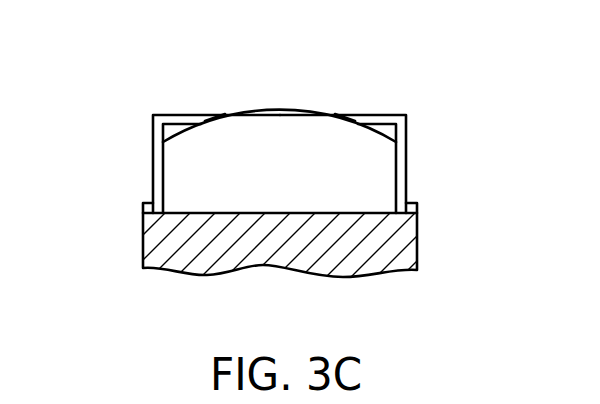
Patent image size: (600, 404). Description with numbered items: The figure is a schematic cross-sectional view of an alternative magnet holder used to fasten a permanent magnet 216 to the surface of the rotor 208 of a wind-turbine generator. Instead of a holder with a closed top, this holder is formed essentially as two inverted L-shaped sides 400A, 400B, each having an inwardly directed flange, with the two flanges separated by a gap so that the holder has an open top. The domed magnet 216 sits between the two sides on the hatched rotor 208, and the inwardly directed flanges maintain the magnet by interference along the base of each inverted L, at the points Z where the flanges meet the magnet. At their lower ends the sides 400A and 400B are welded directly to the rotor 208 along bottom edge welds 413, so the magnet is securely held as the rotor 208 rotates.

The rotor 208 is at (385, 266).
The permanent magnets 216 is at (262, 118).
The inverted L-shaped side 400A is at (152, 152).
The inverted L-shaped side 400B is at (407, 148).
The bottom edge welds 413 is at (142, 211).
The interference points Z is at (215, 116).